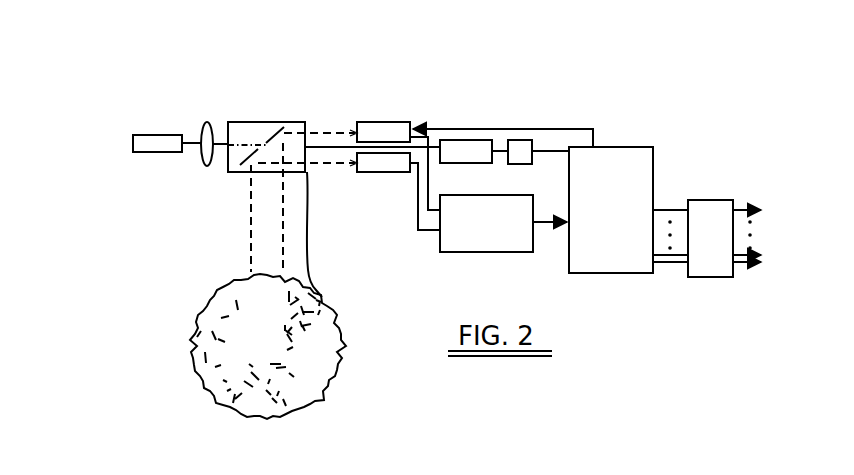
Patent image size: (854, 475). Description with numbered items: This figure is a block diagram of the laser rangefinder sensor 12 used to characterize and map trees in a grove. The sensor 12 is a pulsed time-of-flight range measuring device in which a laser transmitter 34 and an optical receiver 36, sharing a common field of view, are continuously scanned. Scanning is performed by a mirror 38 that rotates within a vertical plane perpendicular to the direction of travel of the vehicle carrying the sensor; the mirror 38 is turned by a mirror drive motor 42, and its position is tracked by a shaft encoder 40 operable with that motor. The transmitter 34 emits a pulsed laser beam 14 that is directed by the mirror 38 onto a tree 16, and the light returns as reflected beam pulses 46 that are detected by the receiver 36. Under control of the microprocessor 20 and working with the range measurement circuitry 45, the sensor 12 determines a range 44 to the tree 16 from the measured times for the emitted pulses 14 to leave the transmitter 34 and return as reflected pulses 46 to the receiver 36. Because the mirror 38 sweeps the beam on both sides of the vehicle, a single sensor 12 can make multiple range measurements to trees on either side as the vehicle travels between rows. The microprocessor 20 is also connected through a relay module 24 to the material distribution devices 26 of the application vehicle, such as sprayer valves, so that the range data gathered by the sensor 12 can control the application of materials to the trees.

The sensor 12 is at (626, 108).
The pulsed laser beam 14 is at (325, 120).
The tree 16 is at (272, 351).
The microprocessor 20 is at (625, 214).
The relay module 24 is at (710, 238).
The material distribution devices 26 is at (762, 238).
The laser transmitter 34 is at (386, 136).
The optical receiver 36 is at (378, 166).
The mirror 38 is at (266, 138).
The shaft encoder 40 is at (458, 150).
The mirror drive motor 42 is at (148, 152).
The range 44 is at (311, 233).
The range measurement circuitry 45 is at (498, 237).
The reflected beam pulses 46 is at (250, 252).